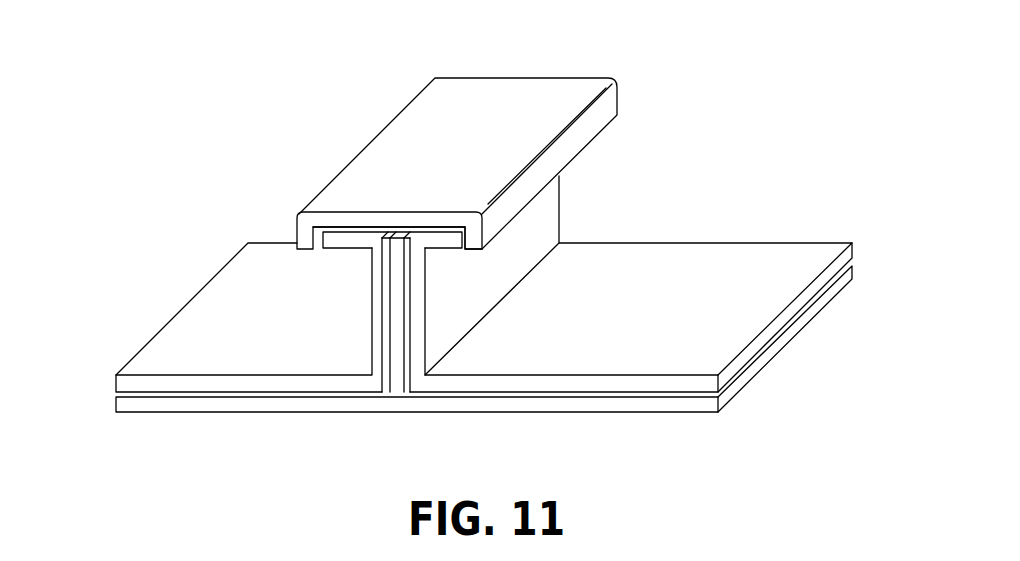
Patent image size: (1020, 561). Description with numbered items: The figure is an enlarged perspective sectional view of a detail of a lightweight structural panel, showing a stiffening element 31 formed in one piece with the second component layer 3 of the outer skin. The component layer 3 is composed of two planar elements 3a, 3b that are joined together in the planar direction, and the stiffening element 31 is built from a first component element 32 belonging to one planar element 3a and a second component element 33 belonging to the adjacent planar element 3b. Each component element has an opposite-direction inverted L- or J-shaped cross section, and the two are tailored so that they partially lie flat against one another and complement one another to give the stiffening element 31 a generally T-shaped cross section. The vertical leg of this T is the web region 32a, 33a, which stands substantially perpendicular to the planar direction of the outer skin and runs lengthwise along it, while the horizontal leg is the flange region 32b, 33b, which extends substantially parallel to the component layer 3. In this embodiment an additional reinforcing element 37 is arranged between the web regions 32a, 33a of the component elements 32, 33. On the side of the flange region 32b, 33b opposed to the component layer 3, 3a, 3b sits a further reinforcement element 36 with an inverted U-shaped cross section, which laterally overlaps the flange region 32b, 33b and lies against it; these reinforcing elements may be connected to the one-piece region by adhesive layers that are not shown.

The second component layer 3 is at (617, 405).
The planar element 3a is at (788, 258).
The planar element 3b is at (248, 265).
The stiffening element 31 is at (402, 59).
The first component element 32 is at (513, 137).
The web region 32a is at (543, 233).
The flange region 32b is at (442, 233).
The second component element 33 is at (264, 262).
The web region 33a is at (375, 330).
The flange region 33b is at (363, 248).
The reinforcement element 36 is at (497, 93).
The additional reinforcing element 37 is at (395, 357).